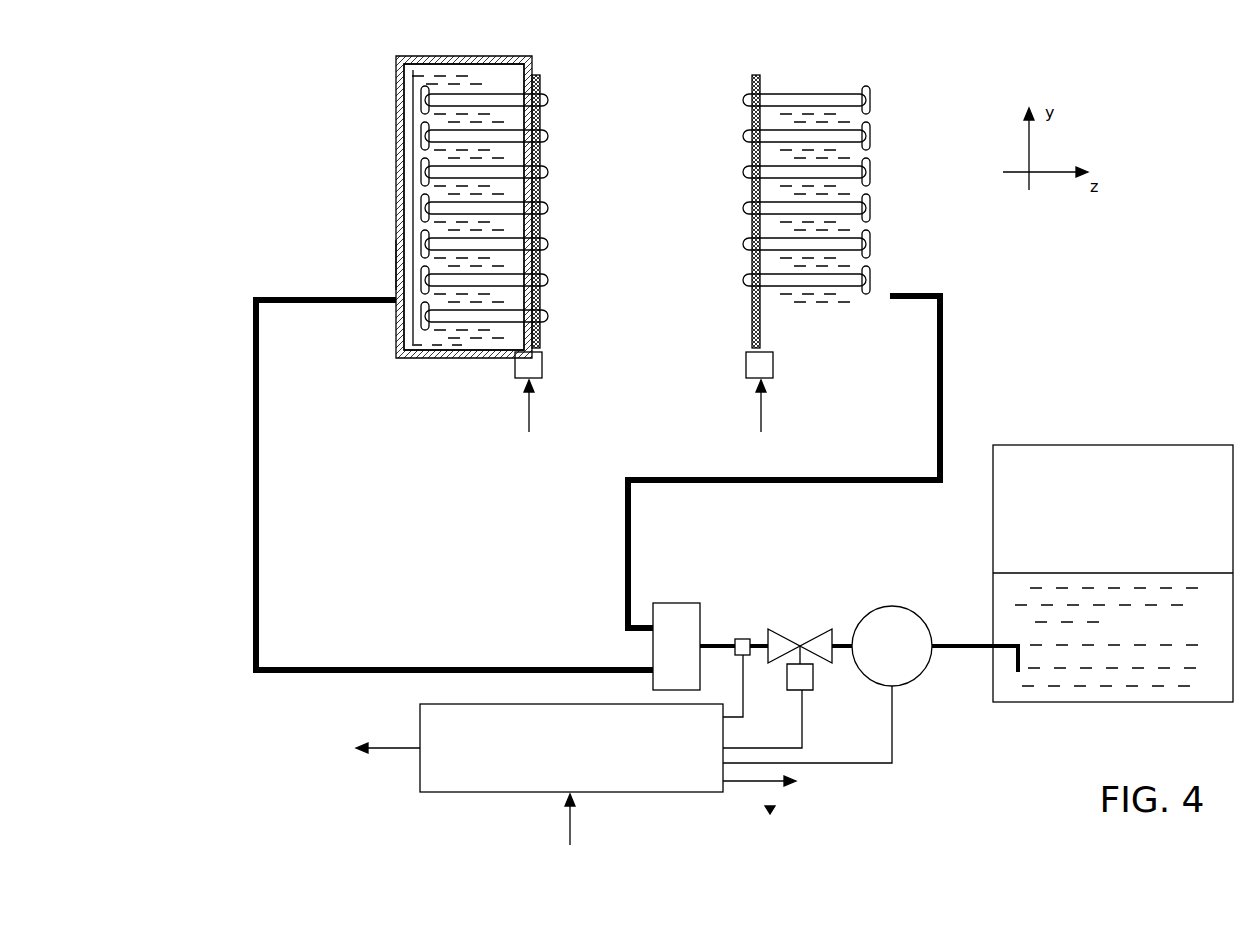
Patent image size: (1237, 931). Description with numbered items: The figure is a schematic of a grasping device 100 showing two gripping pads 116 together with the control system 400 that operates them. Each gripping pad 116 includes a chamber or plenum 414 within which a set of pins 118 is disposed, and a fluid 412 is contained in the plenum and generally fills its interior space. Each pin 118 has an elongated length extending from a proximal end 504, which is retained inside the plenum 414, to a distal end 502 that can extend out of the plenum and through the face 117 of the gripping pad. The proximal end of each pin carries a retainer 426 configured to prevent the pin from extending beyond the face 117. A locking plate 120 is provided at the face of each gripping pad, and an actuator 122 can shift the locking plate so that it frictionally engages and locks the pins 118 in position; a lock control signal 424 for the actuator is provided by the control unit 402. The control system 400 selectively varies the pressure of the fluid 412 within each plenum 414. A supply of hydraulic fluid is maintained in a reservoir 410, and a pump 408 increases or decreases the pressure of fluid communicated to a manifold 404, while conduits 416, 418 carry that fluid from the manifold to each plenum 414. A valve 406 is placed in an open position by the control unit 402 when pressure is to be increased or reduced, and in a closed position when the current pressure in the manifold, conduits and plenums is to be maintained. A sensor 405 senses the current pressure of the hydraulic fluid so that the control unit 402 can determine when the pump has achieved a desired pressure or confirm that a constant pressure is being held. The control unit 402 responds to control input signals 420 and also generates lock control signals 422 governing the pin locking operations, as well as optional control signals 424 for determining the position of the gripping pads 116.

The gripping device 100 is at (322, 136).
The gripping pad 116 is at (396, 210).
The face 117 is at (540, 77).
The pins 118 is at (548, 243).
The locking plate 120 is at (548, 102).
The actuator 122 is at (543, 368).
The control system 400 is at (957, 748).
The control unit 402 is at (571, 748).
The manifold 404 is at (676, 646).
The sensor 405 is at (739, 638).
The valve 406 is at (808, 632).
The pump 408 is at (827, 684).
The reservoir 410 is at (1088, 444).
The fluid 412 is at (858, 507).
The plenum 414 is at (413, 86).
The conduit 416 is at (252, 550).
The conduit 418 is at (942, 384).
The control input 420 is at (568, 834).
The lock control signal 422 is at (740, 784).
The control signal 424 is at (528, 420).
The retainer 426 is at (398, 246).
The distal end 502 is at (548, 136).
The proximal end 504 is at (413, 132).